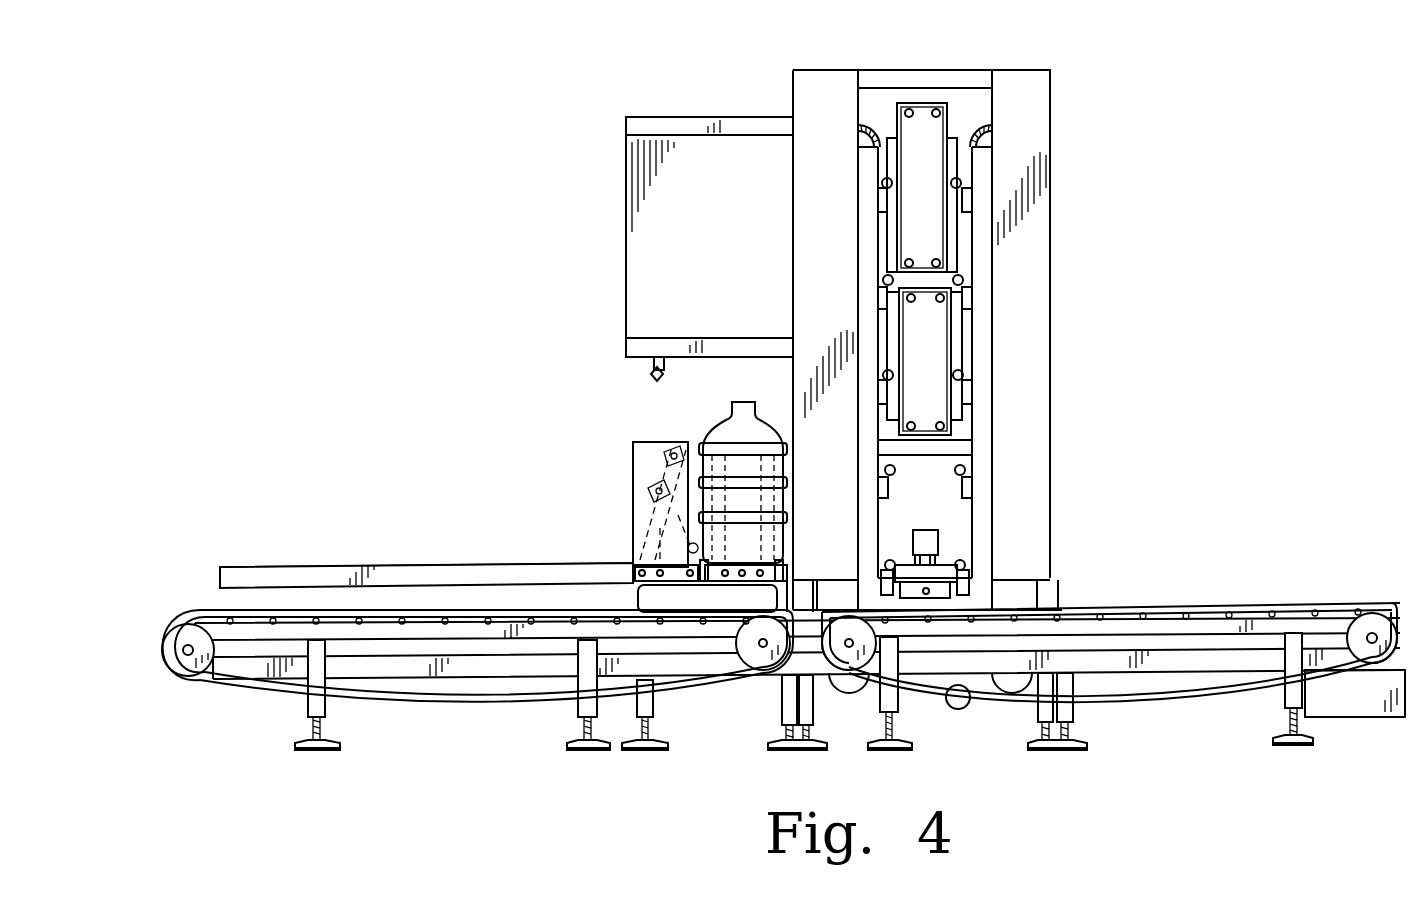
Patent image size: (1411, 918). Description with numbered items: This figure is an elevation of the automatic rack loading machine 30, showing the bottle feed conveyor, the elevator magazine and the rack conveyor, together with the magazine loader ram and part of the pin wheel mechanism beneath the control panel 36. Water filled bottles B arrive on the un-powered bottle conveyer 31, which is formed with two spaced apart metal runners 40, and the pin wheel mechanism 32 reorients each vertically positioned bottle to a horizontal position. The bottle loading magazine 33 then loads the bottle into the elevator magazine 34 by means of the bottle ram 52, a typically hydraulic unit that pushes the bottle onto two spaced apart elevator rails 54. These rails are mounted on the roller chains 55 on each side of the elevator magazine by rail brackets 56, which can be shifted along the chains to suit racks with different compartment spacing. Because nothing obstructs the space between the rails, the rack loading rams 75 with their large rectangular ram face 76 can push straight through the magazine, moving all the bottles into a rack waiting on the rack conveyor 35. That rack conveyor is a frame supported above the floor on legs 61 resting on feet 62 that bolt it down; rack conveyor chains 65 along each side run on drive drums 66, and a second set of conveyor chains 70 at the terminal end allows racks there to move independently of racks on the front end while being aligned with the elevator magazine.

The automatic rack loading machine 30 is at (1106, 174).
The bottle conveyer 31 is at (440, 562).
The pin wheel mechanism 32 is at (725, 600).
The bottle loading magazine 33 is at (935, 524).
The elevator magazine 34 is at (1062, 352).
The rack conveyor 35 is at (219, 698).
The control cabinet 36 is at (697, 257).
The metal runners 40 is at (252, 577).
The bottle ram 52 is at (927, 543).
The elevator rails 54 is at (893, 473).
The roller chains 55 is at (865, 128).
The rail brackets 56 is at (968, 388).
The legs 61 is at (322, 712).
The feet 62 is at (318, 752).
The rack conveyor chains 65 is at (260, 700).
The drive drums 66 is at (755, 660).
The second set of conveyor chains 70 is at (1148, 705).
The rack loading rams 75 is at (922, 94).
The ram face 76 is at (907, 212).
The bottle B is at (740, 430).